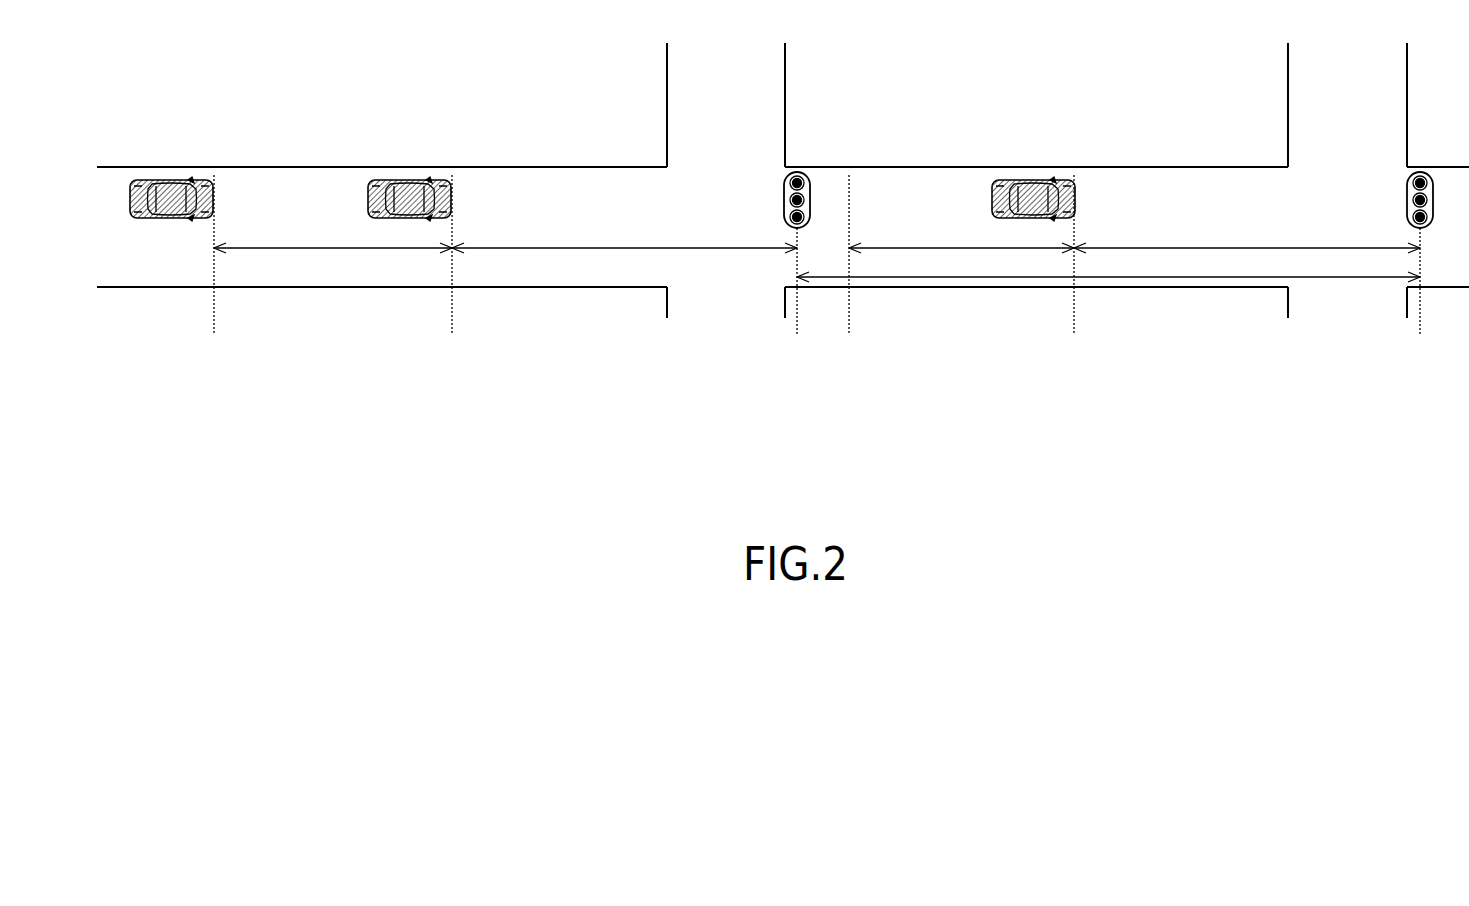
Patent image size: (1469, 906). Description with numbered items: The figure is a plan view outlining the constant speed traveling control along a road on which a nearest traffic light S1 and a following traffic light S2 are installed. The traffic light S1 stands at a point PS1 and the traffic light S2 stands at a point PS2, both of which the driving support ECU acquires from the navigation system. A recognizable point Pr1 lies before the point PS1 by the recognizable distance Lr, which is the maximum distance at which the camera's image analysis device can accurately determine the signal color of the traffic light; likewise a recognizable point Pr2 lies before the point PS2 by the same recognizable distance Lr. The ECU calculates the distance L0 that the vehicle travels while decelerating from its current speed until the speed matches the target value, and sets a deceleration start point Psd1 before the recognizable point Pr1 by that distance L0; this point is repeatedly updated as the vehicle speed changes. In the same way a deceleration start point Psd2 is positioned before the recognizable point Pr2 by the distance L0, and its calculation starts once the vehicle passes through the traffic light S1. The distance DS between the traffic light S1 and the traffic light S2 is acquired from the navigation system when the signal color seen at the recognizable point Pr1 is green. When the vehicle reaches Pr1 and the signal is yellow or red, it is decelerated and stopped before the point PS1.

The traffic light S1 is at (809, 172).
The traffic light S2 is at (1432, 183).
The deceleration start point Psd1 is at (213, 271).
The recognizable point Pr1 is at (453, 271).
The point at which traffic light is installed PS1 is at (800, 297).
The deceleration start point Psd2 is at (879, 271).
The recognizable point Pr2 is at (1076, 271).
The point at which traffic light is installed PS2 is at (1420, 297).
The distance L0 is at (644, 235).
The recognizable distance Lr is at (936, 235).
The distance DS is at (1108, 264).